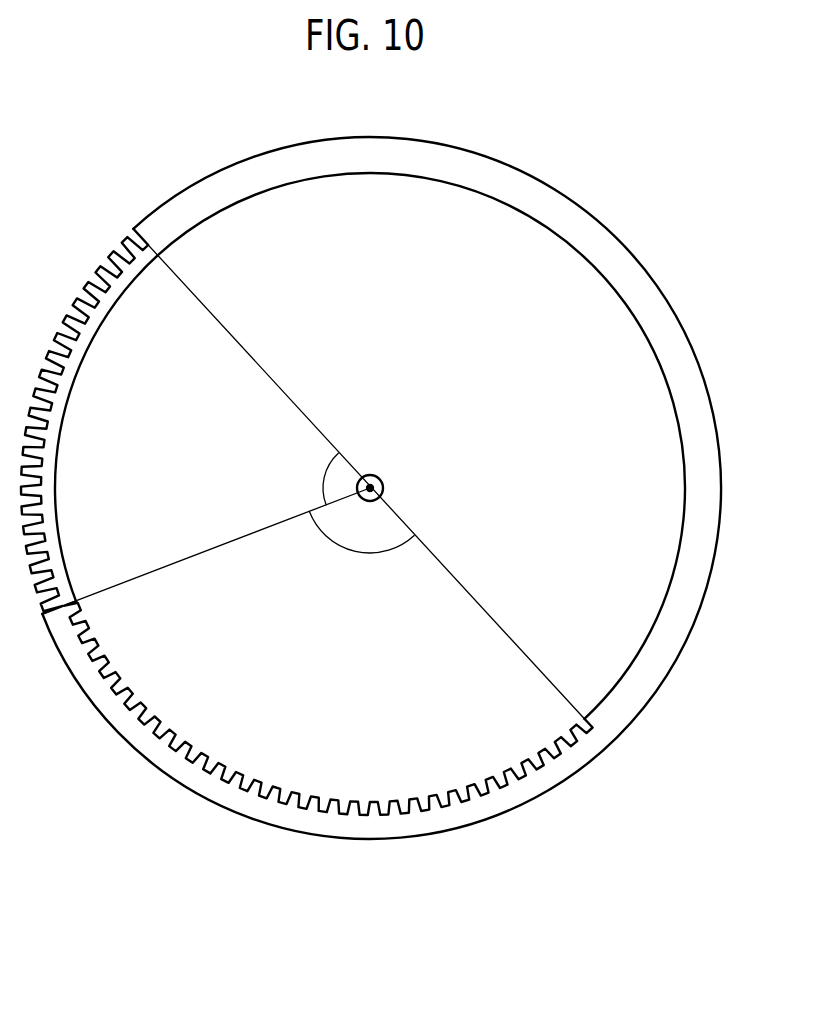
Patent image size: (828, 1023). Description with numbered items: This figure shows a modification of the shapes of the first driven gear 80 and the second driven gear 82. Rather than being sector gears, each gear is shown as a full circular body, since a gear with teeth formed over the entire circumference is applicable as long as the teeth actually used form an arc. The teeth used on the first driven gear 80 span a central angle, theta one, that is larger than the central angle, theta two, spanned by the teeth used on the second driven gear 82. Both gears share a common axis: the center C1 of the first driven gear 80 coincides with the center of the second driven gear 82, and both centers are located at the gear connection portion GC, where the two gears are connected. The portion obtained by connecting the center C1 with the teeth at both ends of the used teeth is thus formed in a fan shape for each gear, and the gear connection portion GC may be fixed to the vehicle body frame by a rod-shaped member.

The first driven gear 80 is at (441, 180).
The second driven gear 82 is at (253, 156).
The gear connection portion GC is at (377, 473).
The center of the first driven gear C1 is at (384, 484).